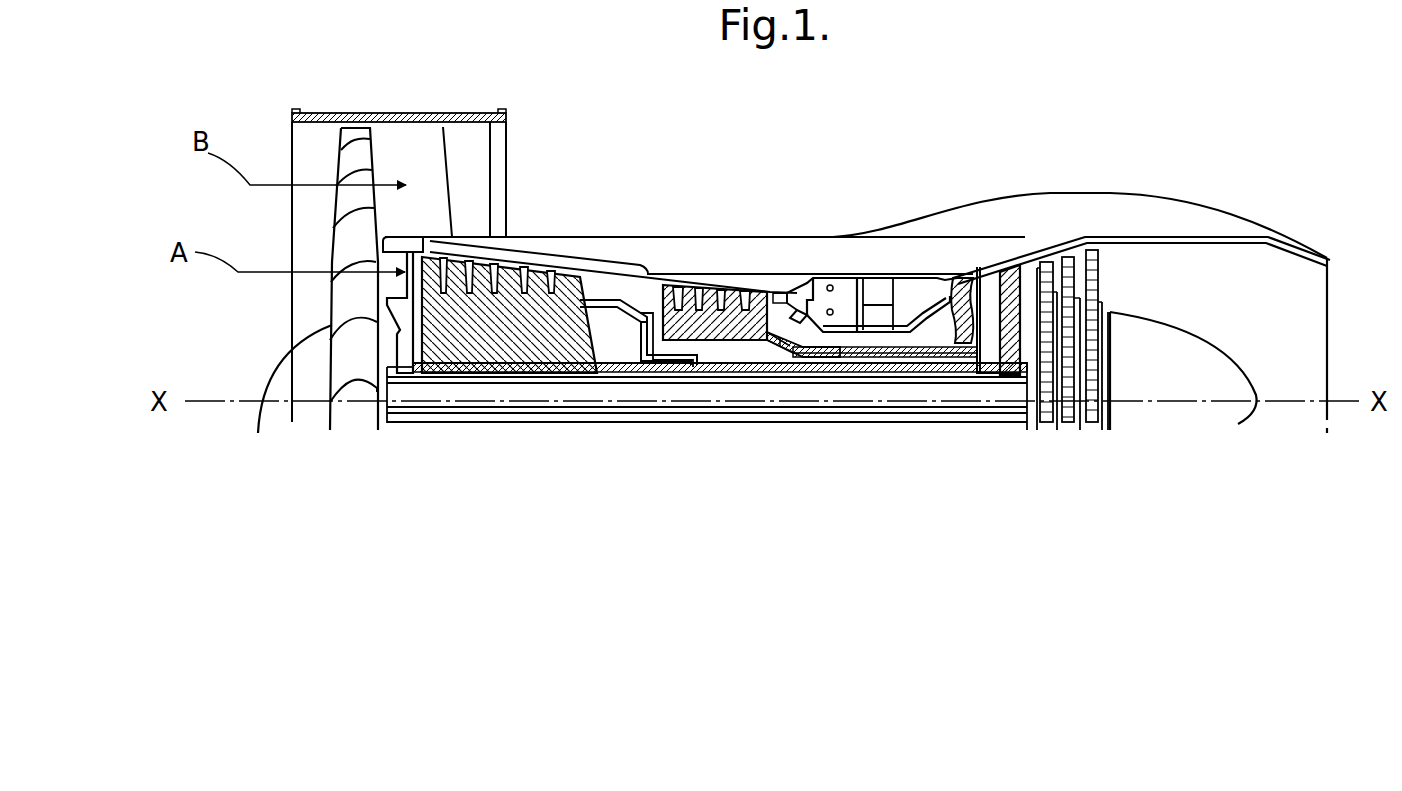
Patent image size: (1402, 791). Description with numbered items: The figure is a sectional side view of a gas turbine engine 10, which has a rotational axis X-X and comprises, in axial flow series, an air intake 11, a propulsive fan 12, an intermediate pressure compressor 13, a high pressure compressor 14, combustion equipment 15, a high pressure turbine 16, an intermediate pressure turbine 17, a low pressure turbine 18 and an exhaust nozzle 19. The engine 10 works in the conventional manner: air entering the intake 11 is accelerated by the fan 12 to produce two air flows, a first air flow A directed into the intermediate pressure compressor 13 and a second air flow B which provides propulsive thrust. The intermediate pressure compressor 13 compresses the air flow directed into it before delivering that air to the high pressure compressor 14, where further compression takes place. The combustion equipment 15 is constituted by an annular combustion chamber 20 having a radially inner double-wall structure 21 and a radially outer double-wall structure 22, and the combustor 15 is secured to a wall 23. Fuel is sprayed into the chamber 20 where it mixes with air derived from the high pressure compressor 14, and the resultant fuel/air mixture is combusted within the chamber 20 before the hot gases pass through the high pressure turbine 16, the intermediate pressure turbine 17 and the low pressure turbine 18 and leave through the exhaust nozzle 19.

The gas turbine engine 10 is at (651, 178).
The air intake 11 is at (268, 225).
The propulsive fan 12 is at (355, 153).
The intermediate pressure compressor 13 is at (508, 322).
The high pressure compressor 14 is at (712, 288).
The combustion equipment 15 is at (880, 268).
The high pressure turbine 16 is at (962, 290).
The intermediate pressure turbine 17 is at (1013, 277).
The low pressure turbine 18 is at (1071, 280).
The exhaust nozzle 19 is at (1305, 317).
The annular combustion chamber 20 is at (806, 318).
The radially inner double-wall structure 21 is at (876, 322).
The radially outer double-wall structure 22 is at (843, 300).
The wall 23 is at (838, 276).